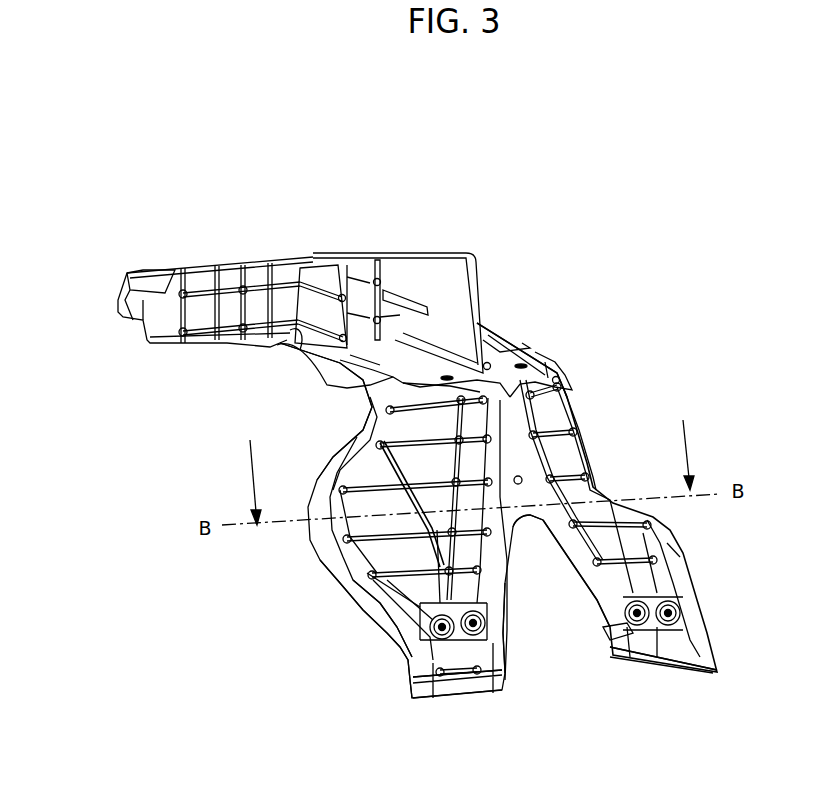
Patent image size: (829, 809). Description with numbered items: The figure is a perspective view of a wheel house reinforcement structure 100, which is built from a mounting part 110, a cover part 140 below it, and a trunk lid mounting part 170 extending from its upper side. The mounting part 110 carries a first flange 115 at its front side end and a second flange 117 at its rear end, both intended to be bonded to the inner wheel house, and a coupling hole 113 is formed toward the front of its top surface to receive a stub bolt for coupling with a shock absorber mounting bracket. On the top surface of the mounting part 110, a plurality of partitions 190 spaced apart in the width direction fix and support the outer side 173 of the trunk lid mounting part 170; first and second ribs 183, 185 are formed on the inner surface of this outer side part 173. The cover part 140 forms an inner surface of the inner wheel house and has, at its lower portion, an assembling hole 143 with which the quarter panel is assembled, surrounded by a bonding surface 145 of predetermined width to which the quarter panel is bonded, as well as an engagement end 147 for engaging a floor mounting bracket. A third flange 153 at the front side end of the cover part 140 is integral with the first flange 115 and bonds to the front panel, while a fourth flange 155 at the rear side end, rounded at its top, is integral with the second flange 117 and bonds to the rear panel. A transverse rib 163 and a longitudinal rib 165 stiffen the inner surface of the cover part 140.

The wheel house reinforcement structure 100 is at (411, 123).
The trunk lid mounting part 170 is at (212, 250).
The outer side part 173 is at (146, 312).
The first rib 183 is at (185, 337).
The second rib 185 is at (242, 343).
The partition 190 is at (318, 278).
The mounting part 110 is at (372, 368).
The second flange 117 is at (334, 392).
The first flange 115 is at (505, 335).
The coupling hole 113 is at (535, 352).
The cover part 140 is at (280, 545).
The transverse rib 163 is at (360, 555).
The longitudinal rib 165 is at (387, 610).
The fourth flange 155 is at (390, 625).
The assembling hole 143 is at (537, 562).
The bonding surface 145 is at (500, 637).
The engagement end 147 is at (500, 650).
The third flange 153 is at (687, 602).